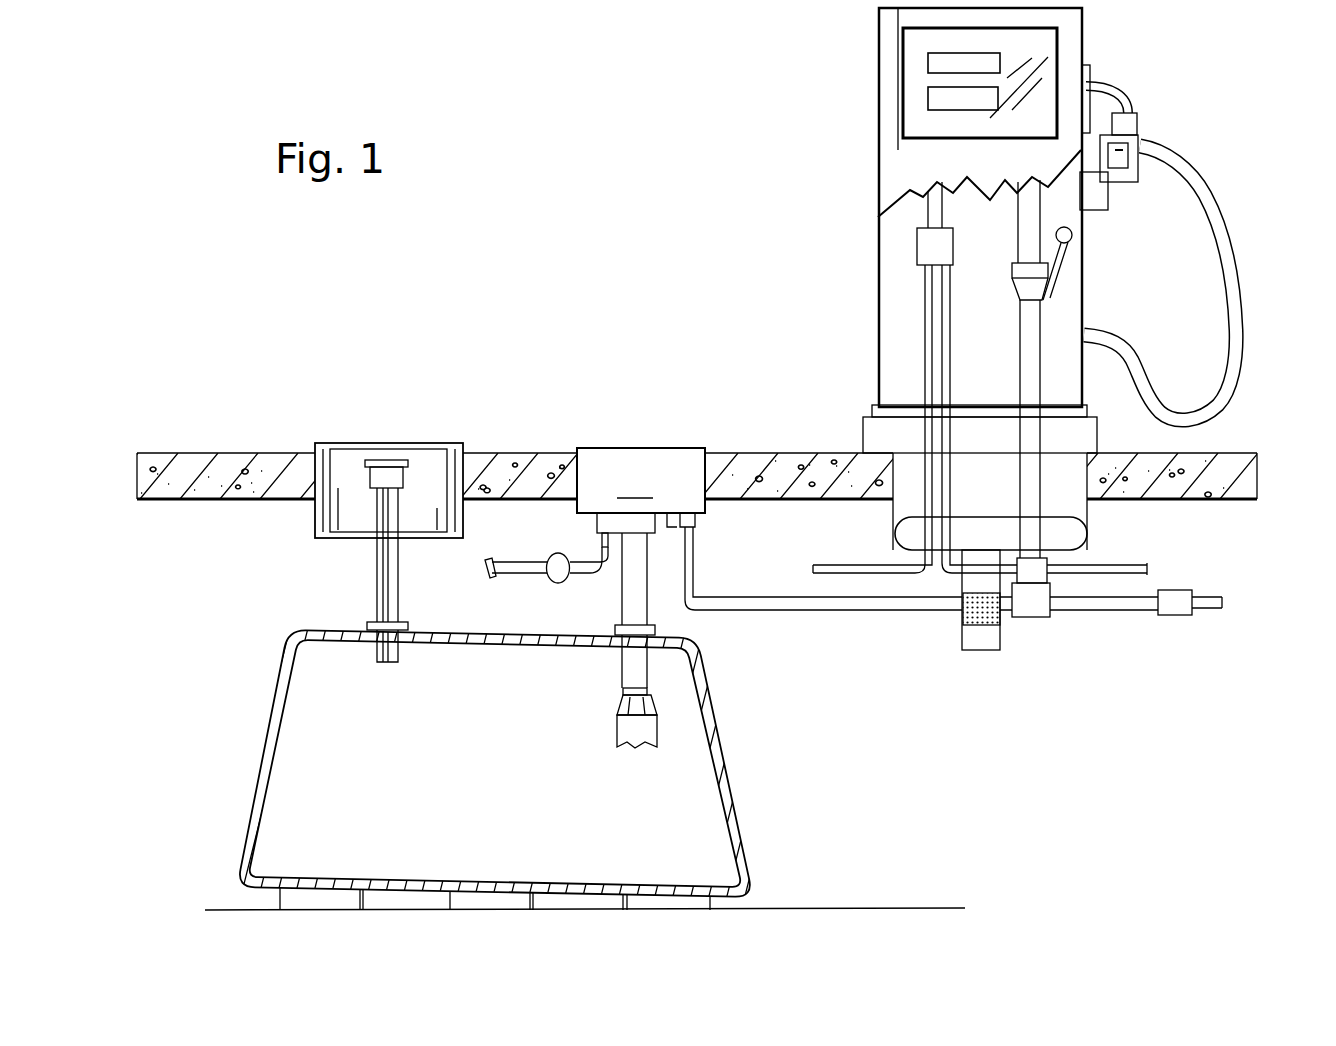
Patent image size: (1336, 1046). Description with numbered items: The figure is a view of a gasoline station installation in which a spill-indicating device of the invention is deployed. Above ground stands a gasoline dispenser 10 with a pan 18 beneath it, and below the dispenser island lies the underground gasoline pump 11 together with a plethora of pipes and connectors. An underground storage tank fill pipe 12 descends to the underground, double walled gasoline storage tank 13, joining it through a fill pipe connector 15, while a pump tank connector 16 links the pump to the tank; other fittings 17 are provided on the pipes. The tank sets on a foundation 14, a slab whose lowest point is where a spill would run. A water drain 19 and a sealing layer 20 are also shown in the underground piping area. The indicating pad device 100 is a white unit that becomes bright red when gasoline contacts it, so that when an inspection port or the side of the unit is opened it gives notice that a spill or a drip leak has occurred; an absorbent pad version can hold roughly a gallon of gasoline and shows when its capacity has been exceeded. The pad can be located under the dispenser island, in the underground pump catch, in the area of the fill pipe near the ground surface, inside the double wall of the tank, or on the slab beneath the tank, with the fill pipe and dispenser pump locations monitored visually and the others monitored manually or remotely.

The gasoline dispenser 10 is at (902, 163).
The underground gasoline pump 11 is at (641, 520).
The underground gasoline storage tank fill pipe 12 is at (383, 585).
The underground, double walled gasoline storage tank 13 is at (270, 753).
The foundation for storage tank 14 is at (762, 897).
The underground fill pipe connector to tank 15 is at (407, 637).
The underground pump tank connector 16 is at (620, 645).
The other fittings on pipes 17 is at (557, 560).
The pan under gasoline dispenser 18 is at (893, 482).
The water drain 19 is at (977, 662).
The sealing layer 20 is at (963, 623).
The indicating pad device 100 is at (1058, 533).